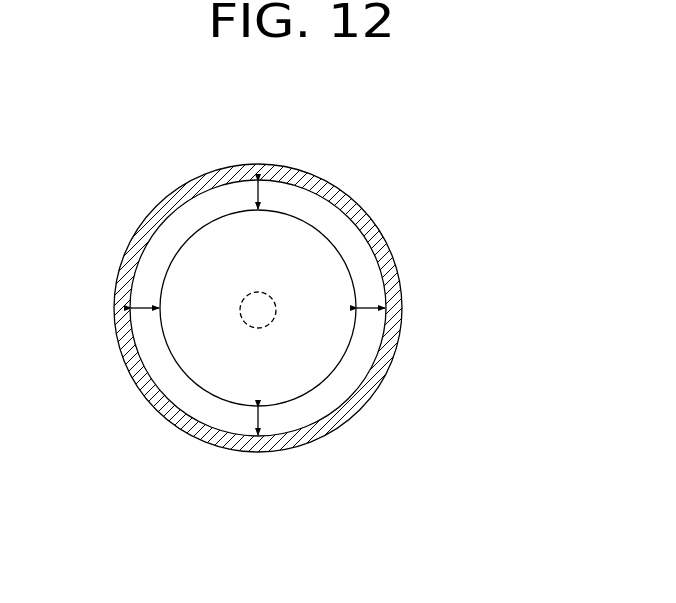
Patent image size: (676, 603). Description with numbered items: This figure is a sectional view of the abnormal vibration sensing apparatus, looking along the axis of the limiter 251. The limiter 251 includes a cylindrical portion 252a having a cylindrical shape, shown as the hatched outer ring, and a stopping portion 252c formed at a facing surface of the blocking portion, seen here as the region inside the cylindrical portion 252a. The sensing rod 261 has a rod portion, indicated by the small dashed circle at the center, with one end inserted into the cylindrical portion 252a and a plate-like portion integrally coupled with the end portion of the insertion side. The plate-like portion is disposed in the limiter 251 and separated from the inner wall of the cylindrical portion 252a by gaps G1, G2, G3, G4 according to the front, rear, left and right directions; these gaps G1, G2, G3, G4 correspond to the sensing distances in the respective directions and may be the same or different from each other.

The limiter 251 is at (338, 308).
The cylindrical portion 252a is at (381, 253).
The stopping portion 252c is at (338, 226).
The sensing rod 261 is at (262, 313).
The gap G1 is at (258, 425).
The gap G2 is at (258, 191).
The gap G3 is at (131, 307).
The gap G4 is at (385, 307).